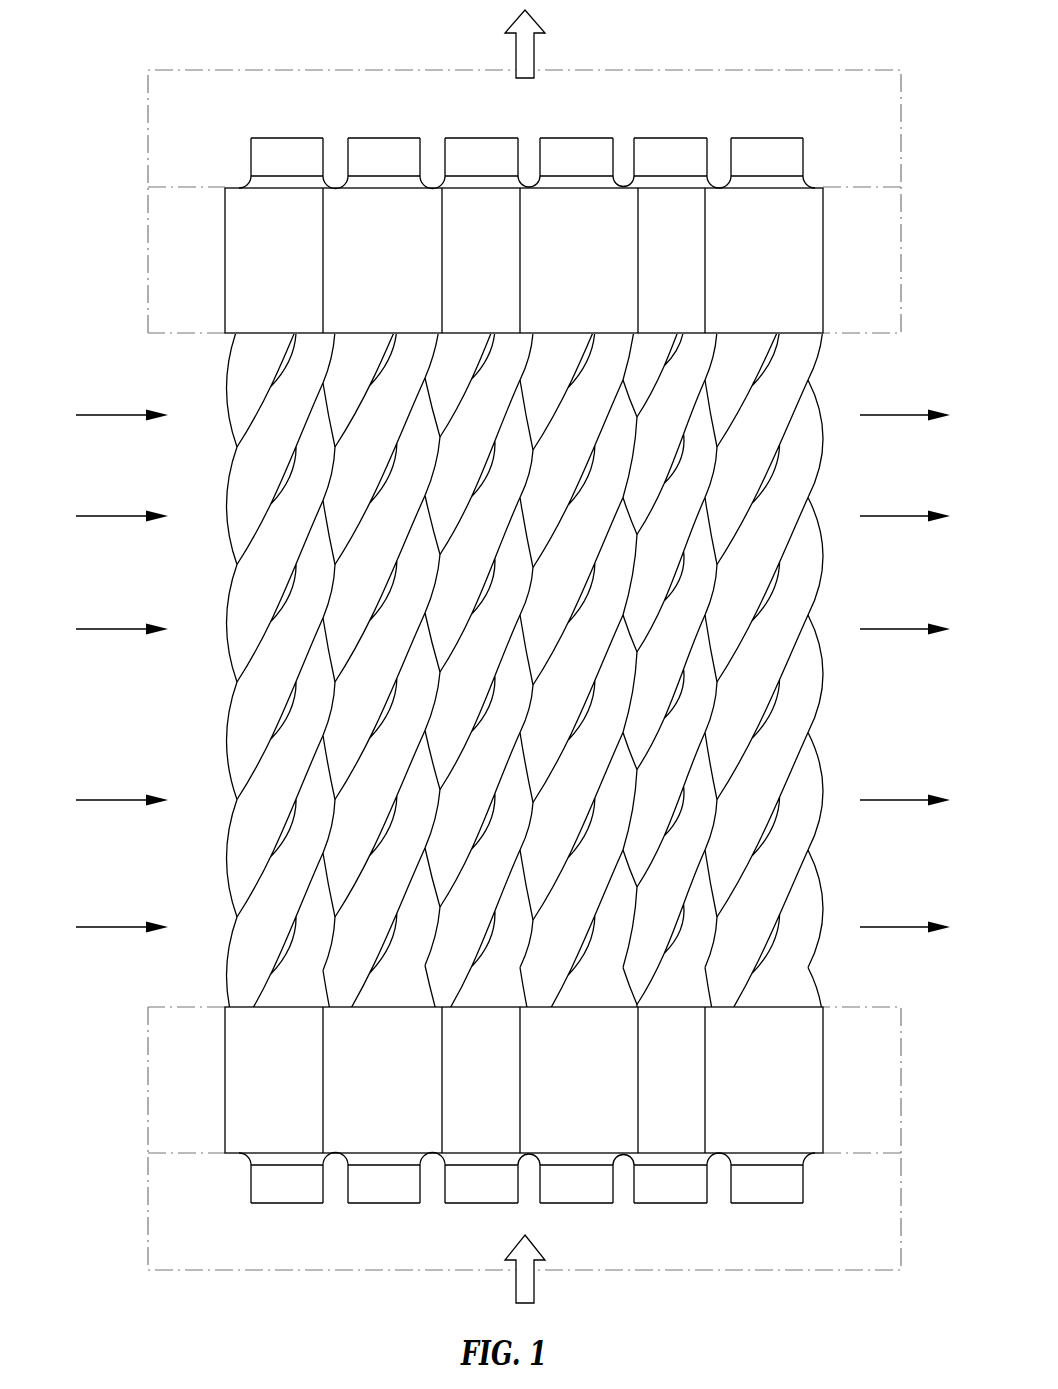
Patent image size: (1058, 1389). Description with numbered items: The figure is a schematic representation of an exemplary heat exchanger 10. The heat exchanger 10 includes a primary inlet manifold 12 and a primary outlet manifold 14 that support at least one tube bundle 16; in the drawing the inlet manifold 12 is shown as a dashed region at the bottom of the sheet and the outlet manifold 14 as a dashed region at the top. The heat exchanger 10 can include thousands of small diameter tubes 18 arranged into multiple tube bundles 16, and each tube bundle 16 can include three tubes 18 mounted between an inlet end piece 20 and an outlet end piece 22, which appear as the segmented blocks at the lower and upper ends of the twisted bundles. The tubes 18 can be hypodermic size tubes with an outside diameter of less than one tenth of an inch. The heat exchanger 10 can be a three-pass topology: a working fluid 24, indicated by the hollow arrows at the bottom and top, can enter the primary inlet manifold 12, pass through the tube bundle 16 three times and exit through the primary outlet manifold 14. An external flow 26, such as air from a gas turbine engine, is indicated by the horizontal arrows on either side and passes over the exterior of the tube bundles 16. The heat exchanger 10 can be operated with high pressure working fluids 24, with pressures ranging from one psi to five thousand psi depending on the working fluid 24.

The heat exchanger 10 is at (103, 147).
The primary inlet manifold 12 is at (902, 1080).
The primary outlet manifold 14 is at (901, 86).
The tube bundle 16 is at (203, 379).
The tube 18 is at (227, 481).
The inlet end piece 20 is at (823, 1113).
The outlet end piece 22 is at (823, 293).
The working fluid 24 is at (534, 55).
The external flow 26 is at (115, 631).